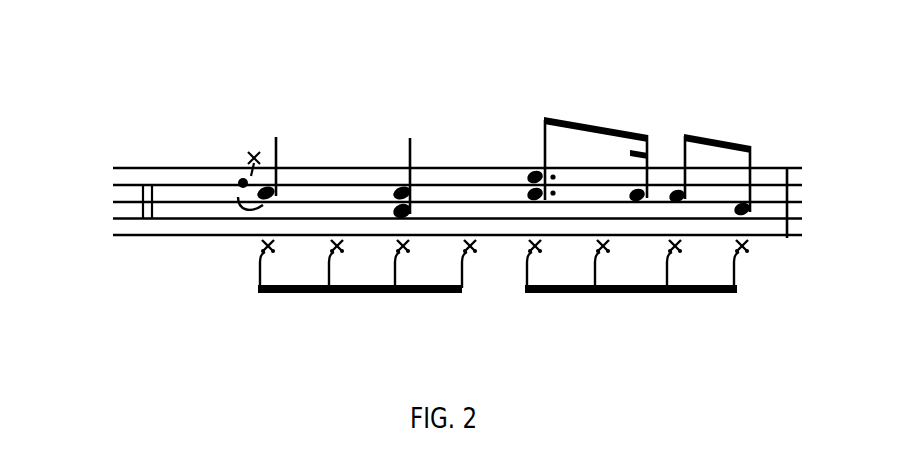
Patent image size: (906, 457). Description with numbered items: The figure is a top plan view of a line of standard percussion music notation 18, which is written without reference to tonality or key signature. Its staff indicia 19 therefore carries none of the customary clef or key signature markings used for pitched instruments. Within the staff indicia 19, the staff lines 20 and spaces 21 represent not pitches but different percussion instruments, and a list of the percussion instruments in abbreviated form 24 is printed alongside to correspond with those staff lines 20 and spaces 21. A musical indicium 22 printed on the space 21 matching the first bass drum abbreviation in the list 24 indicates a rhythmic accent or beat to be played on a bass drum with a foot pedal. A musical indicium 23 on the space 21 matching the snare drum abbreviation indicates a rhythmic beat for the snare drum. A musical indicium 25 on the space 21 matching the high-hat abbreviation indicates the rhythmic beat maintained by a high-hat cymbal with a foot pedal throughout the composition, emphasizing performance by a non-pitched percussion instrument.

The percussion music notation 18 is at (230, 124).
The staff indicia 19 is at (814, 206).
The staff lines 20 is at (302, 168).
The spaces 21 is at (428, 172).
The musical indicium 22 is at (754, 204).
The musical indicium 23 is at (528, 168).
The list of percussion instruments 24 is at (72, 132).
The musical indicium 25 is at (257, 256).